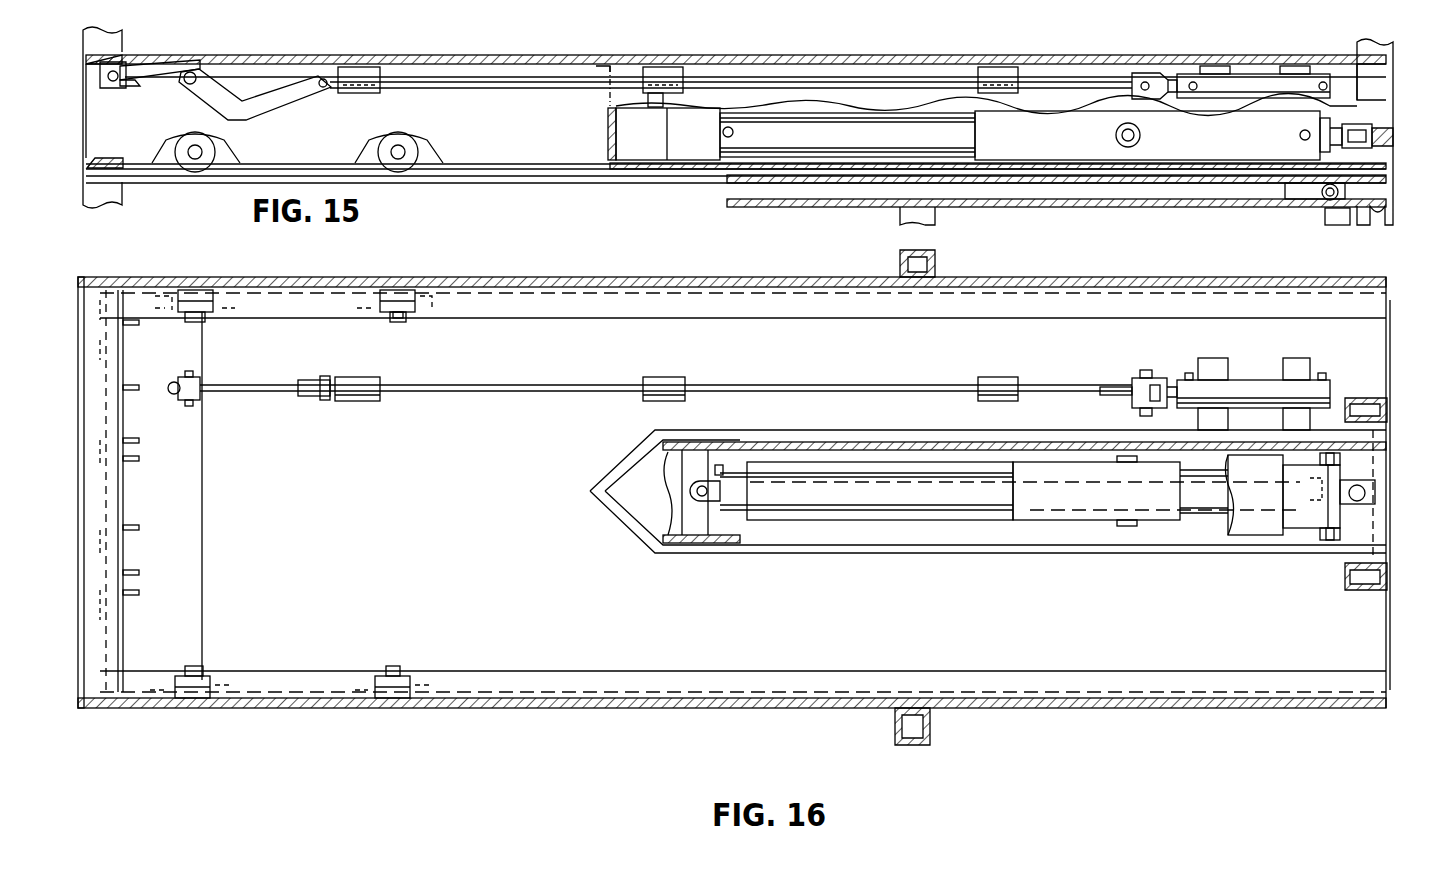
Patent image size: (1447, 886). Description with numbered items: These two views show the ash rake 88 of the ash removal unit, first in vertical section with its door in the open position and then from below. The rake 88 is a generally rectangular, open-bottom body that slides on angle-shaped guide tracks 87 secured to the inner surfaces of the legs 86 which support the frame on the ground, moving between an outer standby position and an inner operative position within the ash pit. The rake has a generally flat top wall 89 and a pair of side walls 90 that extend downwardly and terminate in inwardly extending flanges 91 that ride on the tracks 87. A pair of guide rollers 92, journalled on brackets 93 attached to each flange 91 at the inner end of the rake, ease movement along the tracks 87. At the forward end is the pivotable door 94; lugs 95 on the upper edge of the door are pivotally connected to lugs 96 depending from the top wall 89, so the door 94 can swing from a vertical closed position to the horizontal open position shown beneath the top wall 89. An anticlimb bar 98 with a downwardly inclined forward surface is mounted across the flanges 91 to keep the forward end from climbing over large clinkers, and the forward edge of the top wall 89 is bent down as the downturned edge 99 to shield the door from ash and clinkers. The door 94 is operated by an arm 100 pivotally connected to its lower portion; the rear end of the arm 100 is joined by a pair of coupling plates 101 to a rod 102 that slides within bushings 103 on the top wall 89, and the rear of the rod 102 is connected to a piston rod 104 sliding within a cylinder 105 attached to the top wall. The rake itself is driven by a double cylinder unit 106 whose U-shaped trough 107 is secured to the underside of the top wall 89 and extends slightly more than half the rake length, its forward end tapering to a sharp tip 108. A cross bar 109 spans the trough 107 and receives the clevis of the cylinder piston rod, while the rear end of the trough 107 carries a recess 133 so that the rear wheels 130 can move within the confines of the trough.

In FIG. 15, the legs 86 is at (930, 212).
In FIG. 16, the legs 86 is at (900, 262).
In FIG. 15, the guide tracks 87 is at (592, 185).
In FIG. 15, the ash rake 88 is at (948, 54).
In FIG. 16, the ash rake 88 is at (520, 722).
In FIG. 15, the top wall 89 is at (872, 56).
In FIG. 16, the top wall 89 is at (683, 278).
In FIG. 15, the side walls 90 is at (560, 88).
In FIG. 15, the flanges 91 is at (515, 172).
In FIG. 16, the flanges 91 is at (618, 320).
In FIG. 15, the guide rollers 92 is at (185, 138).
In FIG. 16, the guide rollers 92 is at (202, 290).
In FIG. 15, the brackets 93 is at (225, 153).
In FIG. 16, the brackets 93 is at (205, 322).
In FIG. 15, the door 94 is at (160, 79).
In FIG. 16, the door 94 is at (202, 512).
In FIG. 15, the lugs 95 is at (140, 86).
In FIG. 16, the lugs 95 is at (140, 445).
In FIG. 15, the lugs 96 is at (128, 66).
In FIG. 15, the anticlimb bar 98 is at (87, 163).
In FIG. 16, the anticlimb bar 98 is at (90, 600).
In FIG. 15, the downturned edge 99 is at (100, 78).
In FIG. 15, the arm 100 is at (280, 100).
In FIG. 16, the arm 100 is at (276, 392).
In FIG. 15, the coupling plates 101 is at (345, 68).
In FIG. 15, the rod 102 is at (478, 75).
In FIG. 16, the rod 102 is at (515, 386).
In FIG. 15, the bushings 103 is at (372, 80).
In FIG. 16, the bushings 103 is at (368, 402).
In FIG. 15, the piston rod 104 is at (1174, 72).
In FIG. 16, the piston rod 104 is at (1172, 380).
In FIG. 15, the cylinder 105 is at (1272, 82).
In FIG. 16, the cylinder 105 is at (1262, 388).
In FIG. 15, the double cylinder unit 106 is at (868, 165).
In FIG. 16, the double cylinder unit 106 is at (920, 520).
In FIG. 15, the trough 107 is at (708, 163).
In FIG. 16, the trough 107 is at (1252, 545).
In FIG. 15, the tip 108 is at (606, 137).
In FIG. 16, the tip 108 is at (612, 520).
In FIG. 16, the cross bar 109 is at (700, 528).
In FIG. 16, the rear wheels 130 is at (1340, 458).
In FIG. 16, the recess 133 is at (1285, 490).